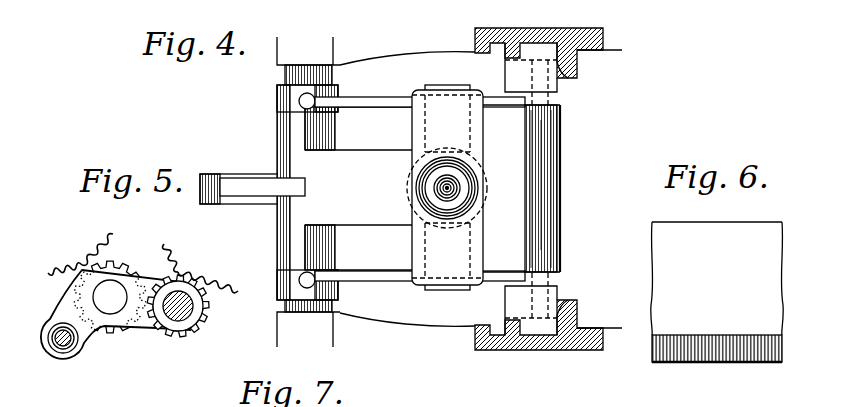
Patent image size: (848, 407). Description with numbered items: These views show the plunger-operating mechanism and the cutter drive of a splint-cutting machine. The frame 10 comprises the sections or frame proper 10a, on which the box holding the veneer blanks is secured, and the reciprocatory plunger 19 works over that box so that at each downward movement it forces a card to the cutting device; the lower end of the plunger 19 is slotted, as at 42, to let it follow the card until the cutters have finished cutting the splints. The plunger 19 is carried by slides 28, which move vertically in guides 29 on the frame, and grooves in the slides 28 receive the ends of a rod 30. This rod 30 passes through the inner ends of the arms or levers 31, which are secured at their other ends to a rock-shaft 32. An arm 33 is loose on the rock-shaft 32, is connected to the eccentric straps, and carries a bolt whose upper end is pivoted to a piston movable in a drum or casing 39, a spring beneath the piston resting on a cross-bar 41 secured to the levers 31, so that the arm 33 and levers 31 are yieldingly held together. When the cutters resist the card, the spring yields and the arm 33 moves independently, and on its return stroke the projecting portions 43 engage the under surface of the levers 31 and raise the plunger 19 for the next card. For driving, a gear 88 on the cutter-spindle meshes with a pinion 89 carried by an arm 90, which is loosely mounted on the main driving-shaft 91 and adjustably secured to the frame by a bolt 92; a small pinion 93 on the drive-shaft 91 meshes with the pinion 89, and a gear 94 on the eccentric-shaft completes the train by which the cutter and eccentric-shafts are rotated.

In FIG. 4, the frame 10 is at (449, 52).
In FIG. 4, the frame sections 10a is at (449, 327).
In FIG. 4, the plunger 19 is at (561, 202).
In FIG. 6, the plunger 19 is at (667, 259).
In FIG. 4, the slides 28 is at (553, 86).
In FIG. 4, the guides 29 is at (576, 63).
In FIG. 4, the rod 30 is at (535, 192).
In FIG. 4, the arms or levers 31 is at (378, 100).
In FIG. 4, the rock-shaft 32 is at (290, 76).
In FIG. 4, the arm 33 is at (292, 144).
In FIG. 4, the drum or casing 39 is at (432, 186).
In FIG. 4, the cross-bar 41 is at (412, 143).
In FIG. 6, the slot 42 is at (694, 360).
In FIG. 4, the projecting portions 43 is at (466, 120).
In FIG. 5, the gear 88 is at (67, 268).
In FIG. 5, the pinion 89 is at (78, 286).
In FIG. 5, the arm 90 is at (93, 334).
In FIG. 5, the main driving-shaft 91 is at (178, 327).
In FIG. 5, the bolt 92 is at (64, 352).
In FIG. 5, the pinion 93 is at (205, 322).
In FIG. 5, the gear 94 is at (222, 289).